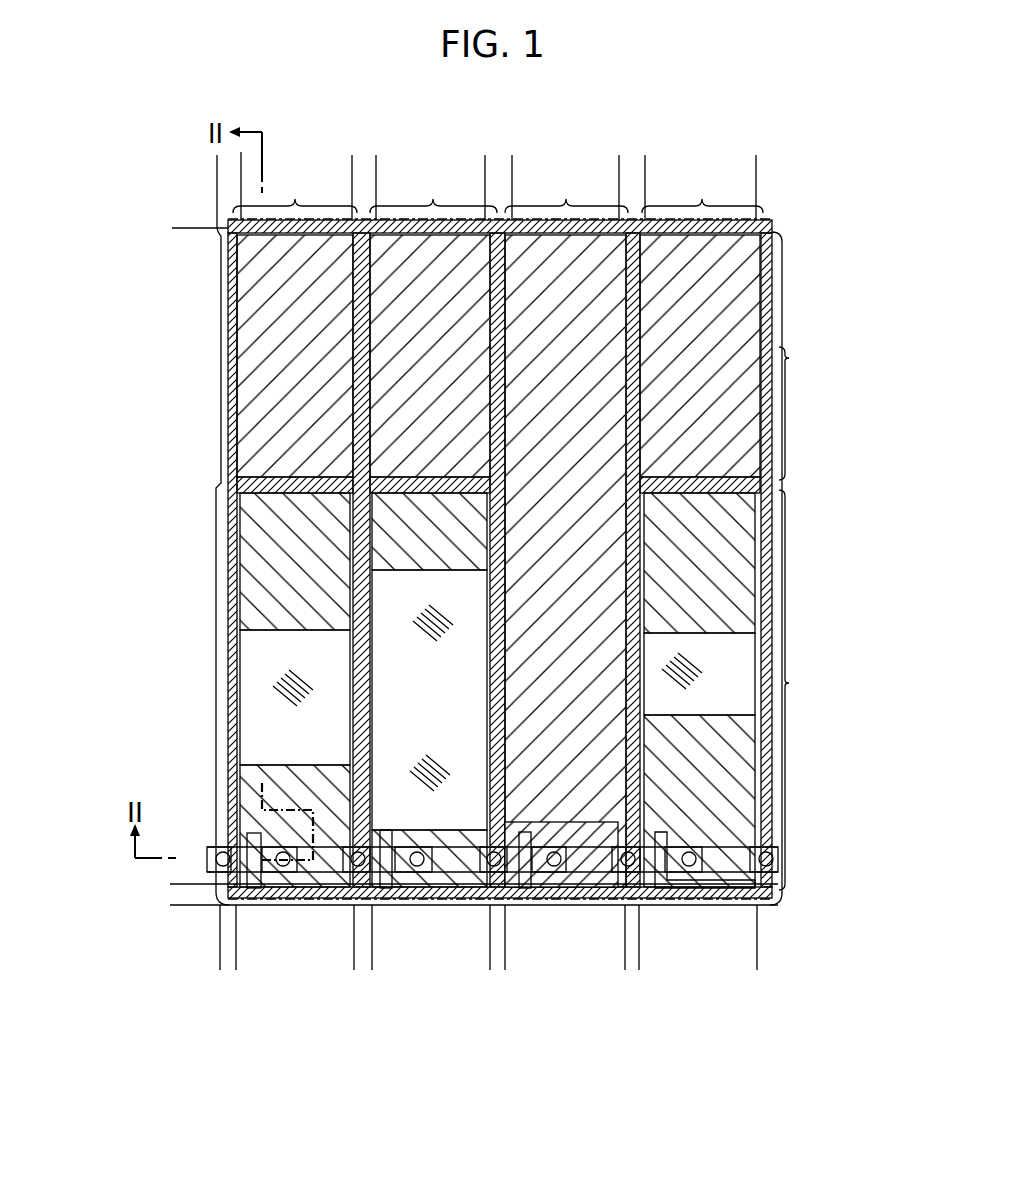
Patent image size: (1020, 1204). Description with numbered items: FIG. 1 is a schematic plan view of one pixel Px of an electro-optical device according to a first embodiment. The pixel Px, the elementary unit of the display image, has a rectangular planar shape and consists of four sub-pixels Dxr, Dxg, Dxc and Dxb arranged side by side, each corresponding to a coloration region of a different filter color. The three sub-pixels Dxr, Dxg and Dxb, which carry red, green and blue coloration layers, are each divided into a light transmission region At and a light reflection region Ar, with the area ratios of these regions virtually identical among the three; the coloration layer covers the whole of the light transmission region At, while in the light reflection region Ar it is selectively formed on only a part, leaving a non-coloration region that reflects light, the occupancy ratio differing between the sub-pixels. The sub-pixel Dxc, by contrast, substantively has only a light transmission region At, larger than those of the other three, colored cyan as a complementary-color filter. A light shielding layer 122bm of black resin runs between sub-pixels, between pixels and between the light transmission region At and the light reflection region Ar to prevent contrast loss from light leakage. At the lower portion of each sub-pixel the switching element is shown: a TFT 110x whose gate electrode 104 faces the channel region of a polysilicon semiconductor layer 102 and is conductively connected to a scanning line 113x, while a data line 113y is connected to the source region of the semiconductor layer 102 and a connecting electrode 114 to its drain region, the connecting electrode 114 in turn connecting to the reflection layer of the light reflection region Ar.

The semiconductor layer 102 is at (210, 903).
The gate electrode 104 is at (257, 835).
The TFT 110x is at (276, 888).
The scanning line 113x is at (427, 910).
The data line 113y is at (223, 388).
The connecting electrode 114 is at (688, 897).
The light shielding layer 122bm is at (772, 318).
The pixel Px is at (152, 188).
The light transmission region At is at (798, 413).
The light reflection region Ar is at (798, 690).
The red sub-pixel Dxr is at (295, 193).
The green sub-pixel Dxg is at (433, 193).
The cyan sub-pixel Dxc is at (566, 193).
The blue sub-pixel Dxb is at (702, 193).